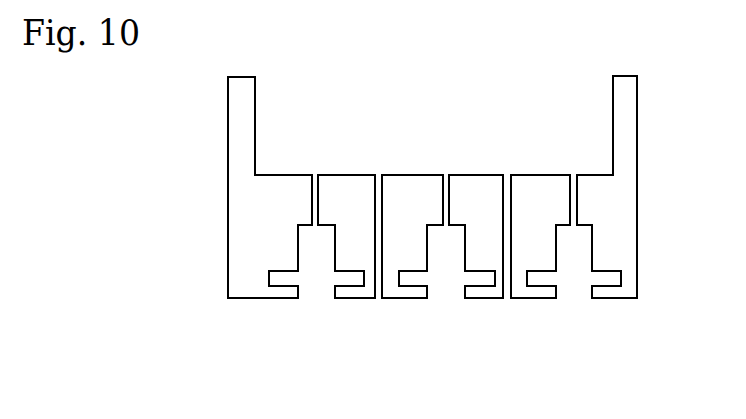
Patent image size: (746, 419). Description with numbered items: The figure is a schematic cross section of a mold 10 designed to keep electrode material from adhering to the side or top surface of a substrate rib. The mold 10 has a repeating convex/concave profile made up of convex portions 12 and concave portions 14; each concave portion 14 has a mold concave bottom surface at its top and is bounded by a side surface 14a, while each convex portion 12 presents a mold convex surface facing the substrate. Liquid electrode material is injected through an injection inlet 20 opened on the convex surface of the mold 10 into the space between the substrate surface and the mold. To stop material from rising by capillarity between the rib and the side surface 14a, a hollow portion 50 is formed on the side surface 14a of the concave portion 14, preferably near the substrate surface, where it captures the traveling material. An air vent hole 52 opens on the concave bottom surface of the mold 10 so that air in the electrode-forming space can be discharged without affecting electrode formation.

The mold 10 is at (464, 241).
The convex portion 12 is at (635, 241).
The concave portion 14 is at (596, 230).
The side surface of the concave portion 14a is at (558, 244).
The injection inlet 20 is at (380, 300).
The hollow portion 50 is at (607, 283).
The air vent hole 52 is at (313, 195).